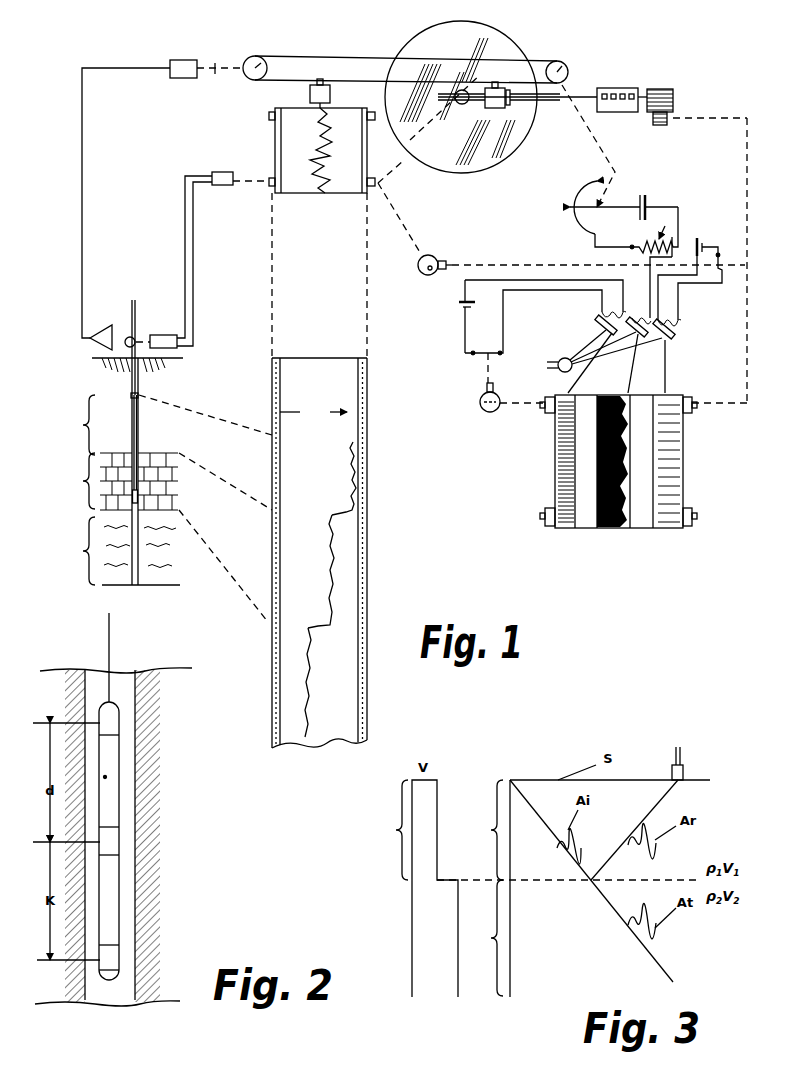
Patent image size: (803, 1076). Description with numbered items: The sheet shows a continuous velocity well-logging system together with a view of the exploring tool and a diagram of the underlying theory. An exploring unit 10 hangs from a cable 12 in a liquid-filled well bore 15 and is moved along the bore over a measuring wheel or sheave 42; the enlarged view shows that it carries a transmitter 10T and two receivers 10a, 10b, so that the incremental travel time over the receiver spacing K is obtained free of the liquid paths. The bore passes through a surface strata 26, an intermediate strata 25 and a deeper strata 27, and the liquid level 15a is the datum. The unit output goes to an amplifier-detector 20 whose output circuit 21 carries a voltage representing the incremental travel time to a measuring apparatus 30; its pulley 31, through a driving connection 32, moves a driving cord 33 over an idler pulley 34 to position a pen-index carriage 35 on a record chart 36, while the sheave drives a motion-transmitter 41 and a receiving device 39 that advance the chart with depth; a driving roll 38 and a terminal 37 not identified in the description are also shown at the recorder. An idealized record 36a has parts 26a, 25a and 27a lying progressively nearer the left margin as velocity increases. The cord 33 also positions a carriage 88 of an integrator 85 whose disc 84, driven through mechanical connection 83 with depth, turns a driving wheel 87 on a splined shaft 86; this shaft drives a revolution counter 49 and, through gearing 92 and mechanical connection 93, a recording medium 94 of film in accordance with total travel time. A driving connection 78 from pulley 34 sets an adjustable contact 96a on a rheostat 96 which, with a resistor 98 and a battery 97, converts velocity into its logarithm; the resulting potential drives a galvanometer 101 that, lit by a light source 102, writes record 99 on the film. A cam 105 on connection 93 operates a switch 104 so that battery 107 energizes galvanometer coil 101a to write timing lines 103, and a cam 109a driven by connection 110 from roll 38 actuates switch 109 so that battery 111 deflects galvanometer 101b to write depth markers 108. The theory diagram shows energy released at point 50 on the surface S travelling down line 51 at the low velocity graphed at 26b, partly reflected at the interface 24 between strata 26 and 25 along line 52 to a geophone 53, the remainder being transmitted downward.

In FIG. 1, the exploring unit 10 is at (137, 498).
In FIG. 2, the exploring unit 10 is at (120, 783).
In FIG. 2, the transmitter 10T is at (113, 724).
In FIG. 2, the receiver 10a is at (113, 843).
In FIG. 2, the receiver 10b is at (112, 962).
In FIG. 1, the cable 12 is at (138, 440).
In FIG. 2, the cable 12 is at (112, 630).
In FIG. 1, the well bore 15 is at (139, 412).
In FIG. 2, the well bore 15 is at (135, 823).
In FIG. 1, the liquid level 15a is at (131, 394).
In FIG. 1, the amplifier-detector 20 is at (101, 328).
In FIG. 1, the output circuit 21 is at (83, 202).
In FIG. 1, the interface 24 is at (118, 455).
In FIG. 3, the interface 24 is at (538, 877).
In FIG. 1, the strata 25 is at (76, 481).
In FIG. 3, the strata 25 is at (482, 938).
In FIG. 1, the section of chart 25a is at (330, 568).
In FIG. 1, the surface strata 26 is at (76, 425).
In FIG. 3, the surface strata 26 is at (490, 830).
In FIG. 1, the part of record 26a is at (352, 478).
In FIG. 3, the velocity graph 26b is at (374, 830).
In FIG. 1, the deeper strata 27 is at (116, 551).
In FIG. 1, the section of chart 27a is at (307, 677).
In FIG. 1, the measuring apparatus 30 is at (177, 74).
In FIG. 1, the pulley 31 is at (252, 58).
In FIG. 1, the driving connection 32 is at (220, 84).
In FIG. 1, the driving cord 33 is at (343, 55).
In FIG. 1, the idler pulley 34 is at (566, 70).
In FIG. 1, the pen-index carriage 35 is at (310, 93).
In FIG. 1, the record chart 36 is at (292, 146).
In FIG. 1, the idealized record 36a is at (312, 366).
In FIG. 1, the recorder input terminal 37 is at (269, 116).
In FIG. 1, the driving roll 38 is at (269, 186).
In FIG. 1, the receiving device 39 is at (222, 186).
In FIG. 1, the motion-transmitter 41 is at (160, 335).
In FIG. 1, the measuring wheel 42 is at (136, 318).
In FIG. 1, the revolution counter 49 is at (620, 88).
In FIG. 3, the point of energy release 50 is at (512, 778).
In FIG. 3, the downward travel path 51 is at (610, 908).
In FIG. 3, the reflected path 52 is at (656, 806).
In FIG. 3, the geophone 53 is at (684, 771).
In FIG. 1, the driving connection 78 is at (601, 147).
In FIG. 1, the mechanical connection 83 is at (403, 176).
In FIG. 1, the disc 84 is at (402, 50).
In FIG. 1, the integrator 85 is at (520, 179).
In FIG. 1, the splined shaft 86 is at (547, 101).
In FIG. 1, the driving wheel 87 is at (511, 105).
In FIG. 1, the carriage 88 is at (496, 95).
In FIG. 1, the gearing 92 is at (673, 95).
In FIG. 1, the mechanical connection 93 is at (748, 205).
In FIG. 1, the recording medium 94 is at (676, 450).
In FIG. 1, the rheostat 96 is at (569, 219).
In FIG. 1, the adjustable contact 96a is at (605, 219).
In FIG. 1, the battery 97 is at (648, 204).
In FIG. 1, the resistor 98 is at (668, 240).
In FIG. 1, the record 99 is at (618, 529).
In FIG. 1, the galvanometer 101 is at (660, 338).
In FIG. 1, the galvanometer coil 101a is at (600, 318).
In FIG. 1, the galvanometer 101b is at (678, 334).
In FIG. 1, the light source 102 is at (564, 357).
In FIG. 1, the timing lines 103 is at (559, 452).
In FIG. 1, the switch 104 is at (485, 369).
In FIG. 1, the cam 105 is at (483, 411).
In FIG. 1, the battery 107 is at (462, 304).
In FIG. 1, the depth markers 108 is at (660, 514).
In FIG. 1, the switch 109 is at (723, 268).
In FIG. 1, the cam 109a is at (440, 258).
In FIG. 1, the connection 110 is at (411, 232).
In FIG. 1, the battery 111 is at (705, 243).